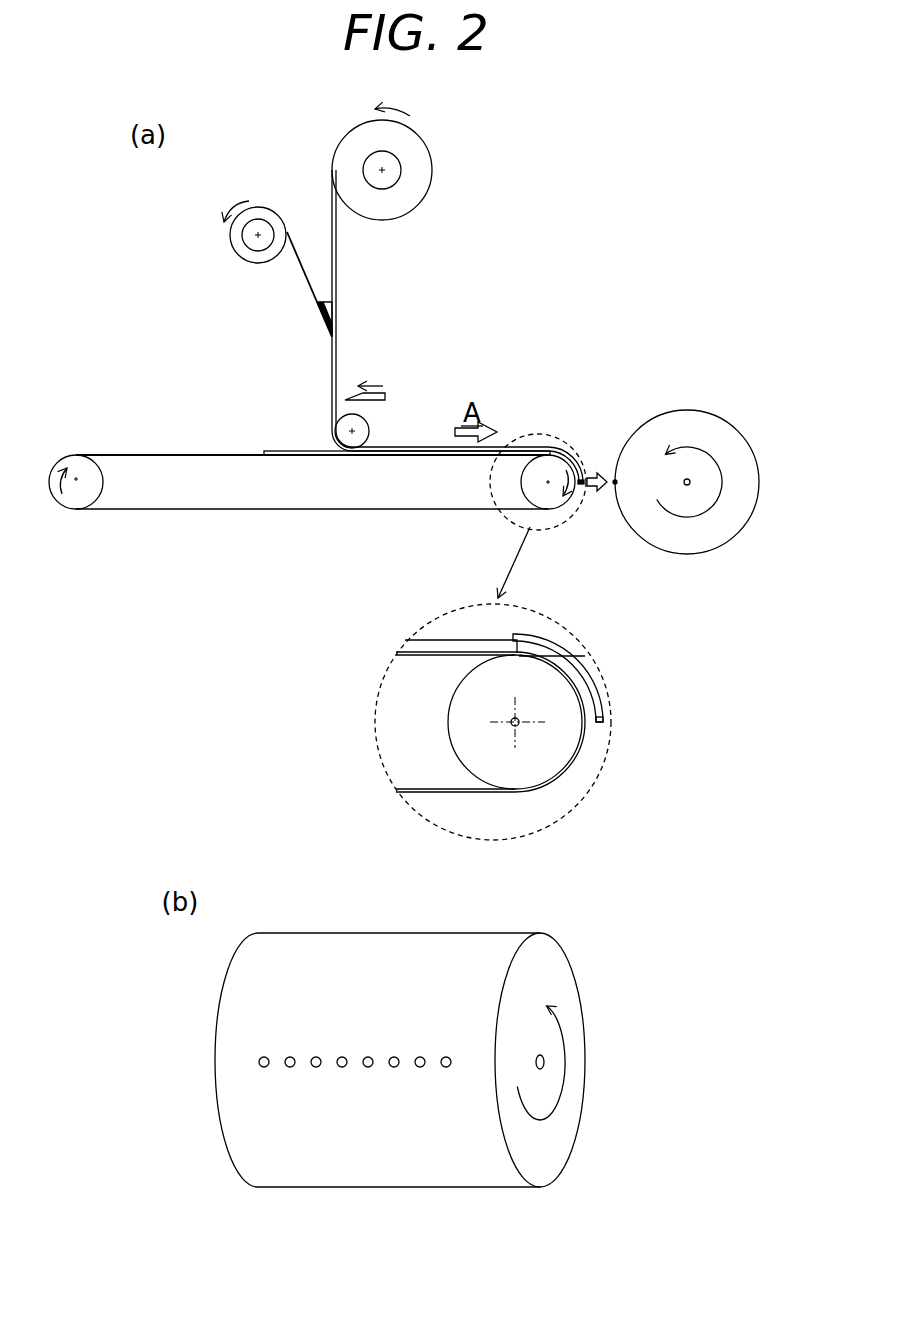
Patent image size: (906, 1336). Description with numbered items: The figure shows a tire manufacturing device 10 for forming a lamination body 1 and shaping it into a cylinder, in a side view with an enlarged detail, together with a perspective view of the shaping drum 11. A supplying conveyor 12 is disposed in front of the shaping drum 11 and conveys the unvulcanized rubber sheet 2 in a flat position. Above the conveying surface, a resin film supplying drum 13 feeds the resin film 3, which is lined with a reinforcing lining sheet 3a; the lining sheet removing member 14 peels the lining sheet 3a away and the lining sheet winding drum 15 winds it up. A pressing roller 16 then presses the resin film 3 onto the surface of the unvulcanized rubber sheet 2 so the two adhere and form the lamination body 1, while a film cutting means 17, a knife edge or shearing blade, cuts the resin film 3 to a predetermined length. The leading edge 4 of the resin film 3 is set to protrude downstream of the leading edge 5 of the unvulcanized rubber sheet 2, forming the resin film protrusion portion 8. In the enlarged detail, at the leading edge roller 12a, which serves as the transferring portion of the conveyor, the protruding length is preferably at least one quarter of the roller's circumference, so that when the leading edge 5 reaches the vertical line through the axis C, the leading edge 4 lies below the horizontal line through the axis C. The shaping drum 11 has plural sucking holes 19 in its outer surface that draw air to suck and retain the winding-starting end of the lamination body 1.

The lamination body 1 is at (594, 582).
The unvulcanized rubber sheet 2 is at (498, 648).
The resin film 3 is at (338, 258).
The lining sheet 3a is at (302, 279).
The leading edge of the resin film 4 is at (600, 734).
The leading edge of the unvulcanized rubber sheet 5 is at (585, 656).
The resin film protrusion portion 8 is at (601, 703).
The tire manufacturing device 10 is at (539, 249).
The shaping drum 11 is at (741, 433).
The supplying conveyor 12 is at (145, 512).
The leading edge roller 12a is at (550, 766).
The resin film supplying drum 13 is at (433, 148).
The lining sheet removing member 14 is at (330, 311).
The lining sheet winding drum 15 is at (269, 208).
The pressing roller 16 is at (370, 431).
The film cutting means 17 is at (386, 395).
The sucking holes 19 is at (615, 480).
The axis of the leading edge roller C is at (513, 727).